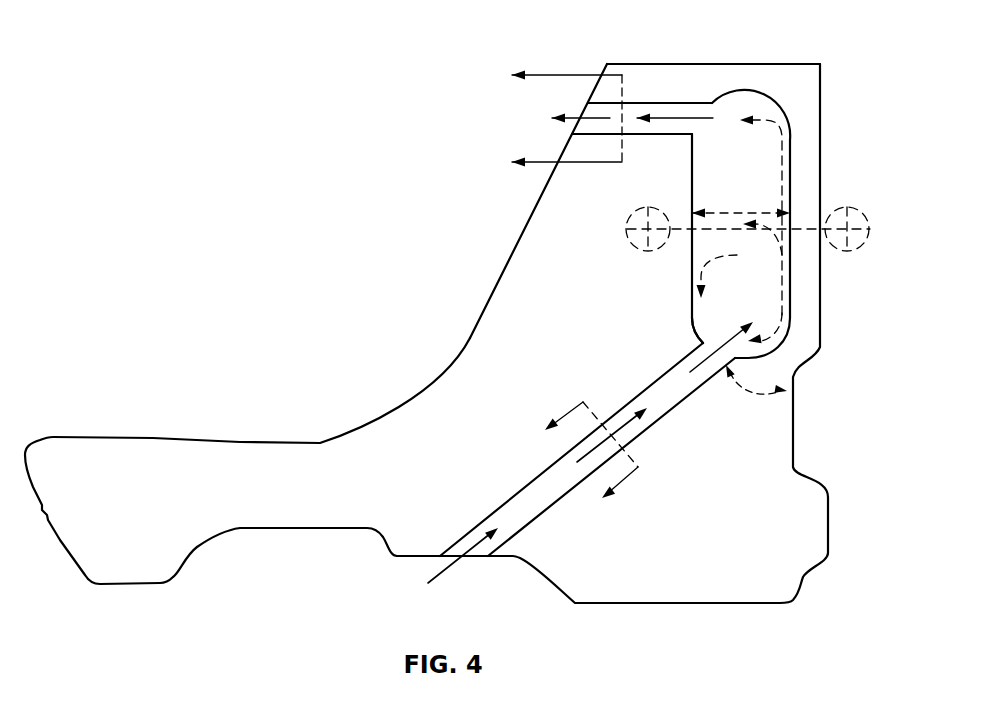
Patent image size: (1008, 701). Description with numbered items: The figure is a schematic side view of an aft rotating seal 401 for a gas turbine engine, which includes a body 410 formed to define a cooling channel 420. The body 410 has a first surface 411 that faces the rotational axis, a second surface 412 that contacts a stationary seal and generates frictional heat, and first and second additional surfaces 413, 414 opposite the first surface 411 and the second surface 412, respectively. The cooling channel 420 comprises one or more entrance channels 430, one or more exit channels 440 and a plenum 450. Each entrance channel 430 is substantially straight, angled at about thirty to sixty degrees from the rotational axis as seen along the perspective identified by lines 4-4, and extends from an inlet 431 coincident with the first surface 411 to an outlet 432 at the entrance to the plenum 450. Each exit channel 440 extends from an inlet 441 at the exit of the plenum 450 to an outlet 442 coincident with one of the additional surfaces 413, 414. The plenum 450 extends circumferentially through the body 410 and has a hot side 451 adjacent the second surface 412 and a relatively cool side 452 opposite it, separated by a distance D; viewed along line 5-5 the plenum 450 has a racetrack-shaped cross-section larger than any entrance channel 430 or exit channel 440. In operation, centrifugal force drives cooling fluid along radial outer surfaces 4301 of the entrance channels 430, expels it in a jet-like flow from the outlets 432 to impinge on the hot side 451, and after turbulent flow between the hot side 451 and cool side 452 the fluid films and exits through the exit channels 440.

The aft rotating seal 401 is at (459, 314).
The body 410 is at (459, 314).
The first surface 411 is at (518, 545).
The second surface 412 is at (812, 293).
The first additional surface 413 is at (521, 201).
The second additional surface 414 is at (732, 80).
The cooling channel 420 is at (737, 374).
The entrance channel 430 is at (562, 463).
The radial outer surface 4301 is at (638, 392).
The inlet 431 is at (470, 542).
The outlet 432 is at (702, 343).
The exit channel 440 is at (617, 78).
The inlet 441 is at (757, 231).
The outlet 442 is at (592, 113).
The plenum 450 is at (798, 204).
The hot side 451 is at (790, 155).
The relatively cool side 452 is at (692, 256).
The line 4- 4 is at (565, 295).
The line 5- 5 is at (848, 225).
The separation distance D is at (743, 212).